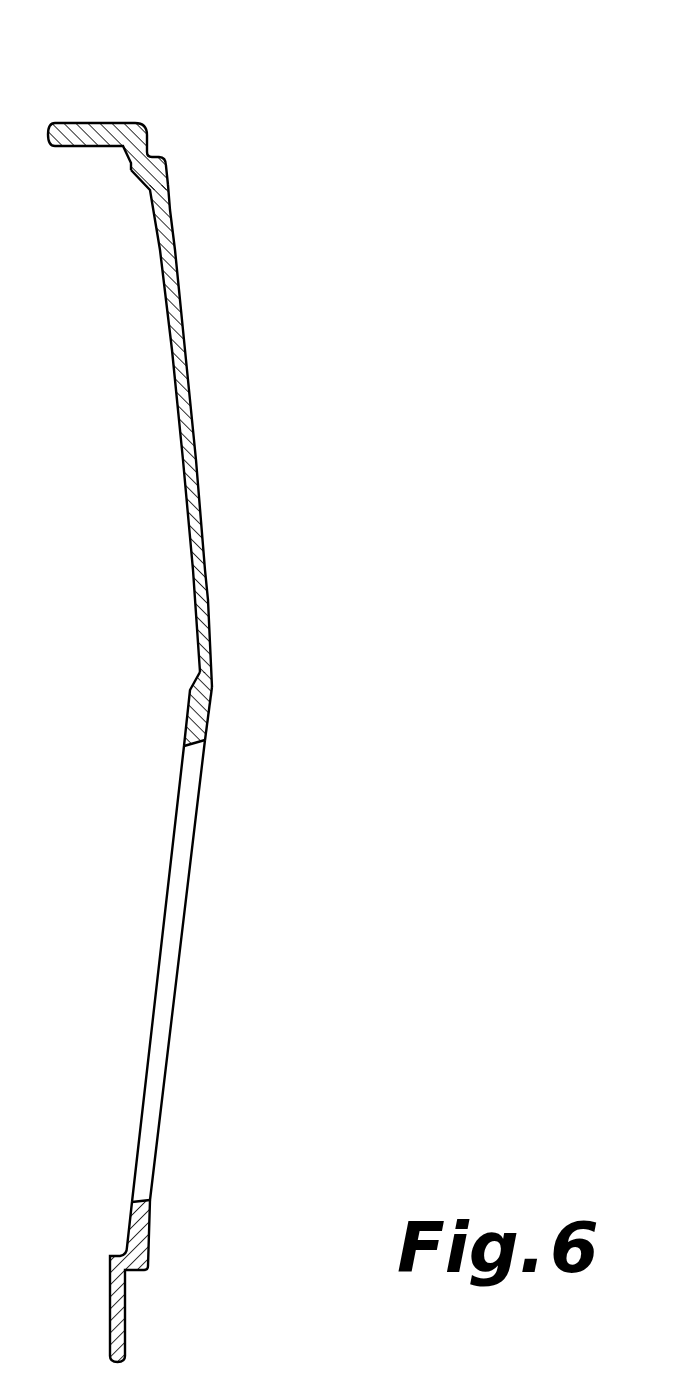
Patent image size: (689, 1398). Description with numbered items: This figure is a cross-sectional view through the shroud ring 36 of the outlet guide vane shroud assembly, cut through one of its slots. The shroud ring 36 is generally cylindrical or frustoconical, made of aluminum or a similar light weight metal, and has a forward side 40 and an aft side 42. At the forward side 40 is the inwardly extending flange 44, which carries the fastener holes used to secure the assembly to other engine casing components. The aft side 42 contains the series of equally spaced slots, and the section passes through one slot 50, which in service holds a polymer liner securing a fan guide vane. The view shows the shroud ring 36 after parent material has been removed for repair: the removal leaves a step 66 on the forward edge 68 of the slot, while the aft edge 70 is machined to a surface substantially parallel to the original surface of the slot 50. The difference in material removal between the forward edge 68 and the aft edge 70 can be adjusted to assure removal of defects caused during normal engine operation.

The shroud ring 36 is at (255, 545).
The forward side 40 is at (176, 251).
The aft side 42 is at (152, 1238).
The flange 44 is at (74, 130).
The slot 50 is at (182, 935).
The step 66 is at (204, 739).
The forward edge 68 is at (188, 748).
The aft edge 70 is at (132, 1201).